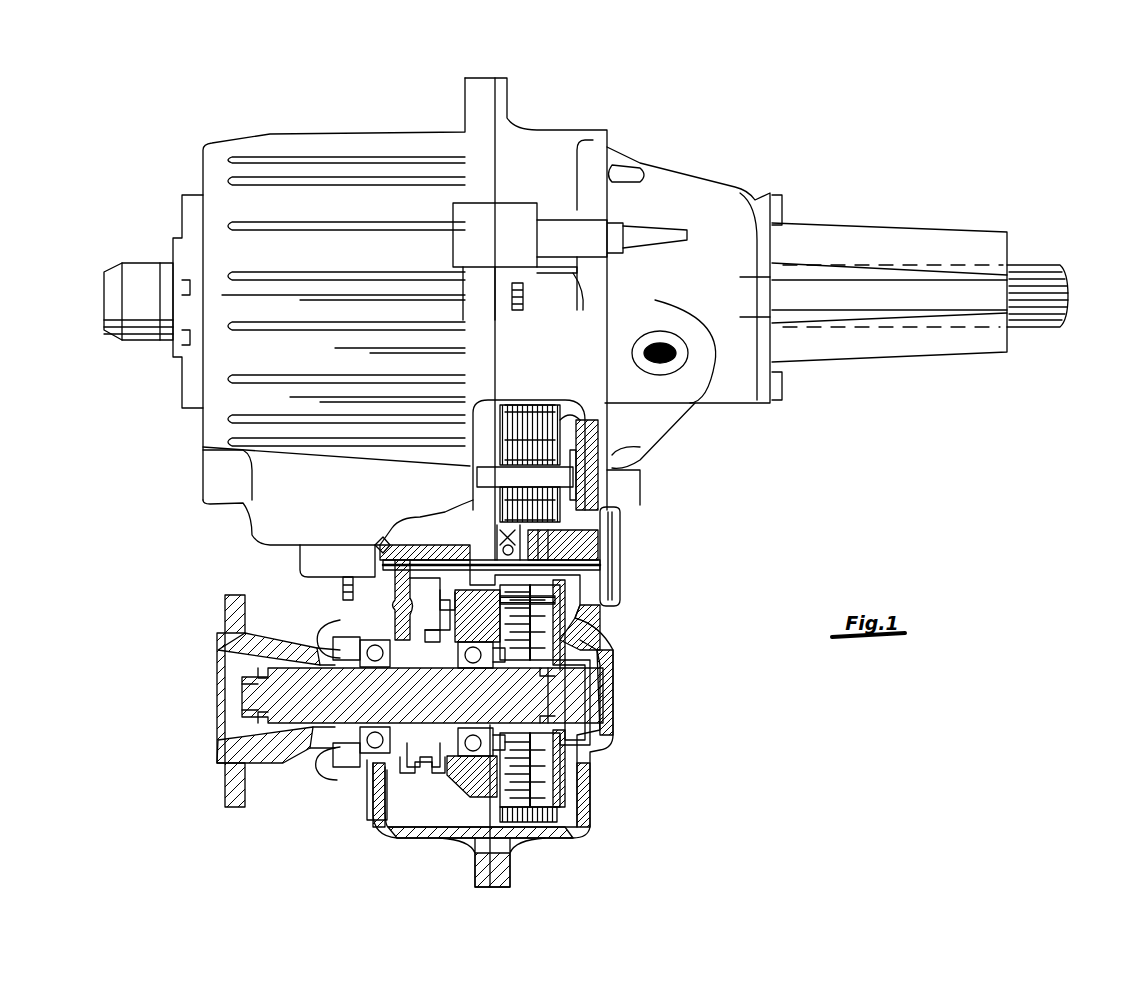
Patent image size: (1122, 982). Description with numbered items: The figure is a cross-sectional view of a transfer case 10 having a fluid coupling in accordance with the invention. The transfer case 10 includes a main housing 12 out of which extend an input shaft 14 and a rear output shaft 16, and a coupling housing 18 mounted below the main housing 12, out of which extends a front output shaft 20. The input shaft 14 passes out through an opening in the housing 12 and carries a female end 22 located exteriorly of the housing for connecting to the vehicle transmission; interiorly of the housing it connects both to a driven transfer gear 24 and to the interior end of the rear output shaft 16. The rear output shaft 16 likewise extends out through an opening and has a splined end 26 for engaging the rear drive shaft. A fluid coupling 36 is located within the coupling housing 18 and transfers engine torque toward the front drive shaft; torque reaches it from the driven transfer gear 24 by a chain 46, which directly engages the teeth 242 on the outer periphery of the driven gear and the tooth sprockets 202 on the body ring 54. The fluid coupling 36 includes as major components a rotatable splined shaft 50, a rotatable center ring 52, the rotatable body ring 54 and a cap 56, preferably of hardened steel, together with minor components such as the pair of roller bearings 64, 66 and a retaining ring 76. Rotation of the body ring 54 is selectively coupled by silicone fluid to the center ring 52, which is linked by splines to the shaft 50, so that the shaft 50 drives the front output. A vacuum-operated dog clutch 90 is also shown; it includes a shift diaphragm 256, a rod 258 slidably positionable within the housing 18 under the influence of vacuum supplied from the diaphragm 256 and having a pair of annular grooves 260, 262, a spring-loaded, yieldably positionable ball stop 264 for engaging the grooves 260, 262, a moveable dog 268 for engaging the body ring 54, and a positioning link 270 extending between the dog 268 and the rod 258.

The transfer case 10 is at (598, 118).
The main housing 12 is at (380, 132).
The input shaft 14 is at (160, 262).
The rear output shaft 16 is at (893, 262).
The coupling housing 18 is at (575, 622).
The front output shaft 20 is at (233, 608).
The female end 22 is at (103, 282).
The driven transfer gear 24 is at (580, 398).
The splined end 26 is at (1033, 264).
The fluid coupling 36 is at (424, 772).
The chain 46 is at (600, 502).
The splined shaft 50 is at (240, 688).
The center ring 52 is at (560, 634).
The body ring 54 is at (500, 598).
The cap 56 is at (610, 733).
The roller bearing 64 is at (478, 733).
The roller bearing 66 is at (347, 650).
The retaining ring 76 is at (551, 730).
The dog clutch 90 is at (372, 543).
The tooth sprockets 202 is at (565, 606).
The teeth 242 is at (530, 400).
The shift diaphragm 256 is at (622, 583).
The rod 258 is at (438, 545).
The annular groove 260 is at (493, 560).
The annular groove 262 is at (600, 562).
The ball stop 264 is at (590, 546).
The moveable dog 268 is at (352, 600).
The positioning link 270 is at (425, 600).